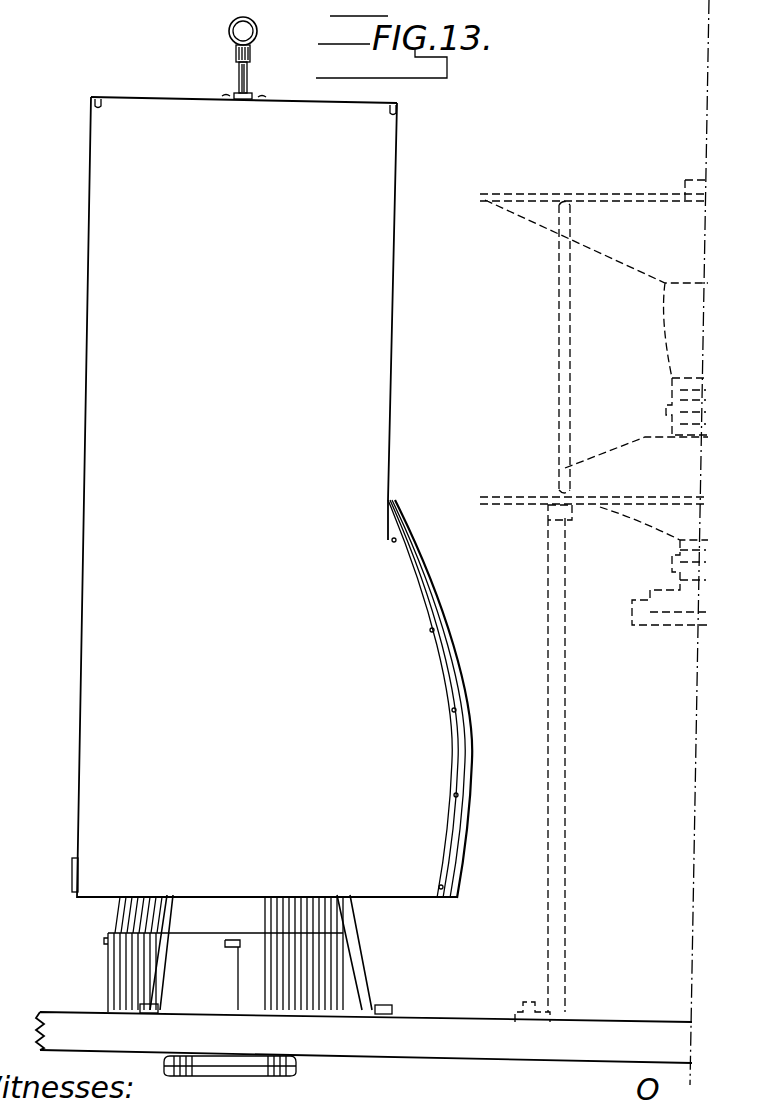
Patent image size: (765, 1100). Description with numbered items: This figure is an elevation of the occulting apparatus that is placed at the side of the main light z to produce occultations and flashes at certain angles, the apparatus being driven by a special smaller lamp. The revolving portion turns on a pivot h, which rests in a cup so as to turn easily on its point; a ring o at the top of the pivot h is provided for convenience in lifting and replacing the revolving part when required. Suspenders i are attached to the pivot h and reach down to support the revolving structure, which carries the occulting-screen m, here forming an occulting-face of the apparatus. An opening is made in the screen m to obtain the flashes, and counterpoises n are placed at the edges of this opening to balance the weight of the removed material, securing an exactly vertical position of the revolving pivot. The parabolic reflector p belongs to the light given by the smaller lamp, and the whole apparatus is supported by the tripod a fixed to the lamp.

The ring o is at (256, 31).
The pivot h is at (249, 80).
The suspenders i is at (244, 98).
The occulting-screen m is at (267, 497).
The counterpoises n is at (70, 862).
The parabolic reflector p is at (457, 645).
The tripod a is at (158, 970).
The main light z is at (594, 601).